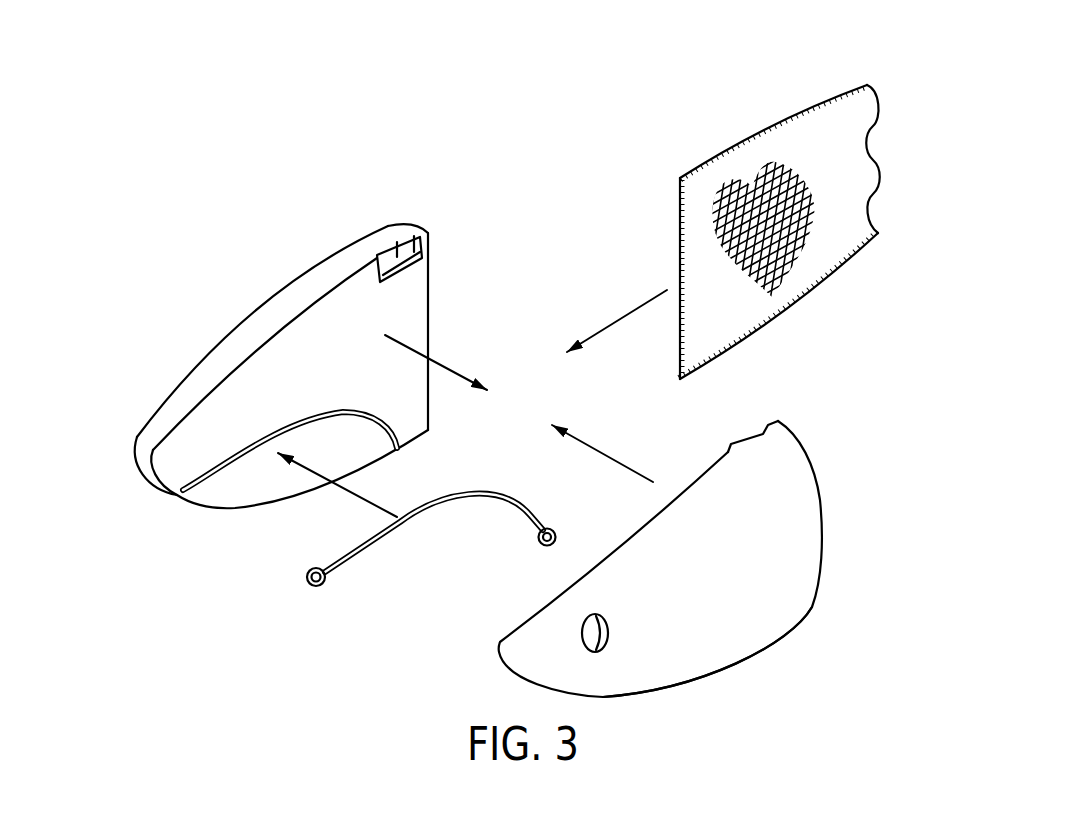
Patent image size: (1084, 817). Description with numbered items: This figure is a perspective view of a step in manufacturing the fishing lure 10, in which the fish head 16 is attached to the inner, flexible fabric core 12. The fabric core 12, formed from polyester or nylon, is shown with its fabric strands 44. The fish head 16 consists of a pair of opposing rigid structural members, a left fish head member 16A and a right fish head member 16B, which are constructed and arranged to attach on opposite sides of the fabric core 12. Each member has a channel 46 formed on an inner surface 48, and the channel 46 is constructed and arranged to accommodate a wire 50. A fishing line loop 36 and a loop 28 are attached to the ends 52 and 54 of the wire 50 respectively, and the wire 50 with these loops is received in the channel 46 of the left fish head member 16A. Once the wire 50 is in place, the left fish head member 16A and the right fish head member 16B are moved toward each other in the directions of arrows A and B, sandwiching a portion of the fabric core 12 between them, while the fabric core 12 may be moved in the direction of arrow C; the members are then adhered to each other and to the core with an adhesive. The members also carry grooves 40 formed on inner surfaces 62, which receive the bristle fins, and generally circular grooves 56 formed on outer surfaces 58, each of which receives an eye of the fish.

The fishing lure 10 is at (518, 102).
The fabric core 12 is at (797, 134).
The fabric strands 44 is at (783, 247).
The fish head 16 is at (496, 442).
The left fish head member 16A is at (261, 371).
The right fish head member 16B is at (698, 559).
The inner surfaces 62 is at (285, 352).
The inner surface 48 is at (197, 428).
The channel 46 is at (207, 492).
The grooves 40 is at (397, 258).
The wire 50 is at (430, 515).
The end 52 is at (327, 571).
The end 54 is at (549, 511).
The fishing line loop 36 is at (312, 570).
The loop 28 is at (558, 533).
The grooves 56 is at (604, 637).
The outer surfaces 58 is at (730, 640).
The arrow A is at (453, 368).
The arrow B is at (600, 450).
The arrow C is at (608, 323).